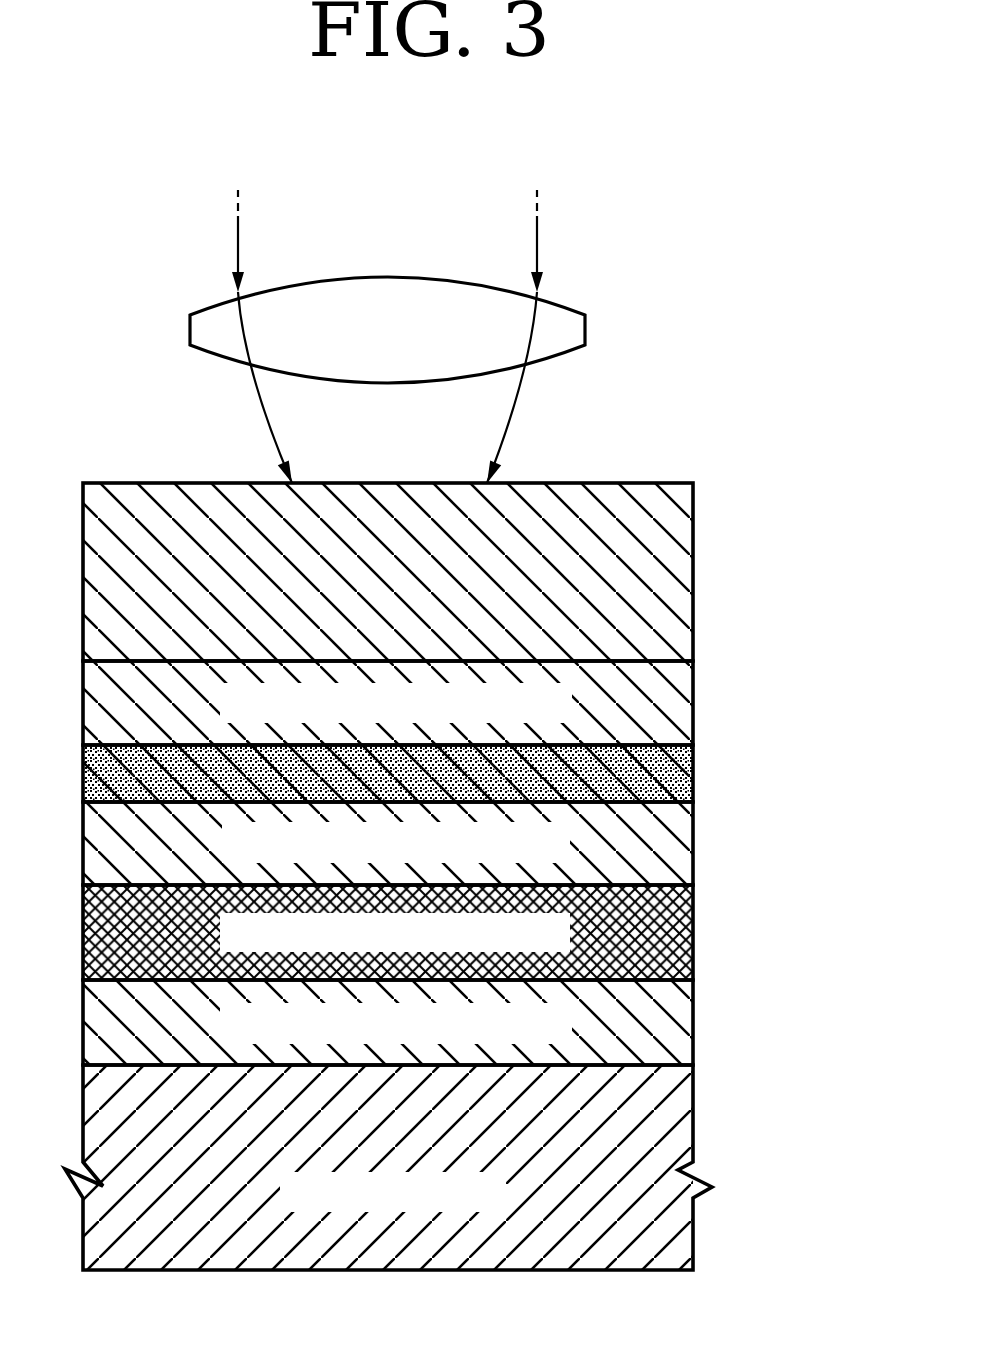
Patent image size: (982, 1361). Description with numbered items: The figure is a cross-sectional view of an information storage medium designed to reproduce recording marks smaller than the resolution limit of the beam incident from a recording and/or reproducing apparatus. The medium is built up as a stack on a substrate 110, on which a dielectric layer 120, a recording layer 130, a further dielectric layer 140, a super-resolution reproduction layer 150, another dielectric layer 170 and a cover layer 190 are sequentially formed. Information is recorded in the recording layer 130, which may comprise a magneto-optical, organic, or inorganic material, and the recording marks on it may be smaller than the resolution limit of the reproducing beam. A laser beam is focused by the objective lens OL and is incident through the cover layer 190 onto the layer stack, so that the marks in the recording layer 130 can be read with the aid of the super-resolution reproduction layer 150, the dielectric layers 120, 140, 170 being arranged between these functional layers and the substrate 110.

The objective lens OL is at (586, 332).
The cover layer 190 is at (677, 573).
The dielectric layer 170 is at (677, 705).
The super-resolution reproduction layer 150 is at (677, 772).
The dielectric layer 140 is at (677, 840).
The recording layer 130 is at (677, 930).
The dielectric layer 120 is at (677, 1022).
The substrate 110 is at (677, 1142).